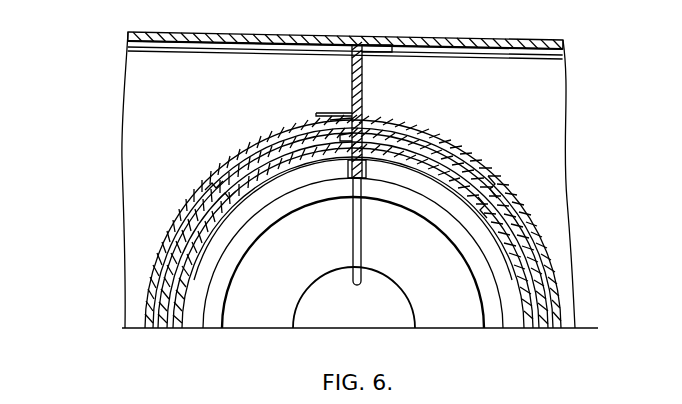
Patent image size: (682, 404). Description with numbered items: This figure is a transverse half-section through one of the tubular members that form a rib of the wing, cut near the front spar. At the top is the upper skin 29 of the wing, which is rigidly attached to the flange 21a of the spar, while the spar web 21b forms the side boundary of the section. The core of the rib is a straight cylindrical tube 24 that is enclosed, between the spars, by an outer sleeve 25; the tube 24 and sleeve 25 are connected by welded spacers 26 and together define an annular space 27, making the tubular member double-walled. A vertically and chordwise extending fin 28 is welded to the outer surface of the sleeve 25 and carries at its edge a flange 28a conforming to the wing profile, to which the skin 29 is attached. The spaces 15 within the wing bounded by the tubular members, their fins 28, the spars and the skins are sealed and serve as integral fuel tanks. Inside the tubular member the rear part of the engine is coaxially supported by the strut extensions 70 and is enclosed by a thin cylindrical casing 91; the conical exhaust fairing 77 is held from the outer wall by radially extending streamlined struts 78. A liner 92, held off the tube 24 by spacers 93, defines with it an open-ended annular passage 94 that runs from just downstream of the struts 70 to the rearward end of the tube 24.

The spaces within the wing 15 is at (190, 134).
The flange of the spar 21a is at (222, 50).
The web of the spar 21b is at (122, 157).
The tube 24 is at (535, 253).
The outer sleeve 25 is at (522, 208).
The spacers 26 is at (495, 182).
The annular space 27 is at (441, 150).
The fins 28 is at (363, 89).
The flanges of the fins 28a is at (390, 53).
The upper skin of the wing 29 is at (285, 37).
The strut extensions 70 is at (362, 166).
The conical exhaust fairing 77 is at (405, 312).
The struts 78 is at (362, 252).
The cylindrical shell or casing 91 is at (297, 199).
The liner 92 is at (538, 286).
The spacers 93 is at (483, 203).
The annular passage 94 is at (530, 317).